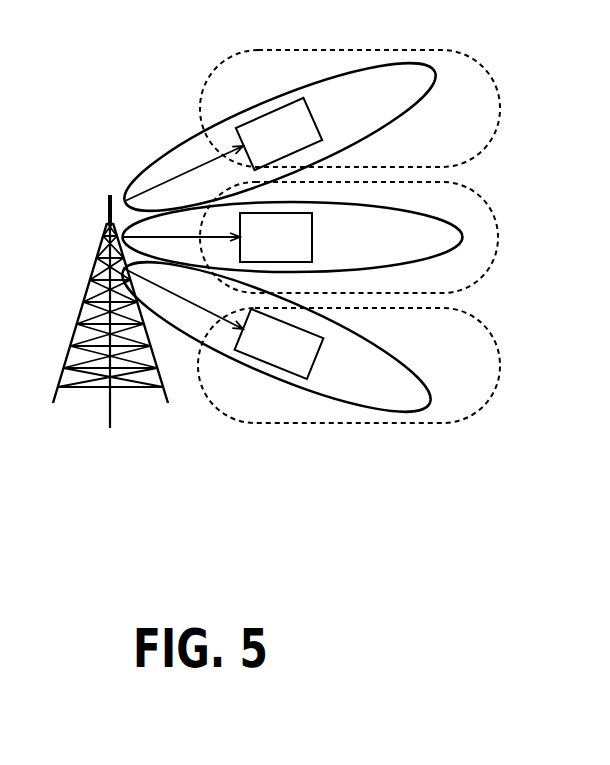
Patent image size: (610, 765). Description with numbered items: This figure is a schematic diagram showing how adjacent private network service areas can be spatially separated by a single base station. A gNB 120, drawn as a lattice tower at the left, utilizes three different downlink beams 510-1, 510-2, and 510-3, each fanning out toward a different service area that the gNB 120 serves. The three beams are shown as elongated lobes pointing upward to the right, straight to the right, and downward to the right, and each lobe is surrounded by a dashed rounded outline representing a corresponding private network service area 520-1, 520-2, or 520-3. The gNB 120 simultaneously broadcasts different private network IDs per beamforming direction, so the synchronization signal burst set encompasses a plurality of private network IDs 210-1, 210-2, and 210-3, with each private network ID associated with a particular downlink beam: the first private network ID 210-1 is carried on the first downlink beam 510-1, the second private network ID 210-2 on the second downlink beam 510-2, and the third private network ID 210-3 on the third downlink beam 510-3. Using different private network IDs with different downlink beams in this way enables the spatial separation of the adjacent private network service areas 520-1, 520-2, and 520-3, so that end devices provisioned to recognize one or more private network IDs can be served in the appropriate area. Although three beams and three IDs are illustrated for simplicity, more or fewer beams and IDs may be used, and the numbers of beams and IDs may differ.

The gNB 120 is at (90, 296).
The downlink beam 510-1 is at (178, 143).
The downlink beam 510-2 is at (420, 211).
The downlink beam 510-3 is at (183, 337).
The private network service area 520-1 is at (423, 50).
The private network service area 520-2 is at (498, 240).
The private network service area 520-3 is at (422, 423).
The private network ID 210-1 is at (252, 146).
The private network ID 210-2 is at (250, 249).
The private network ID 210-3 is at (252, 356).